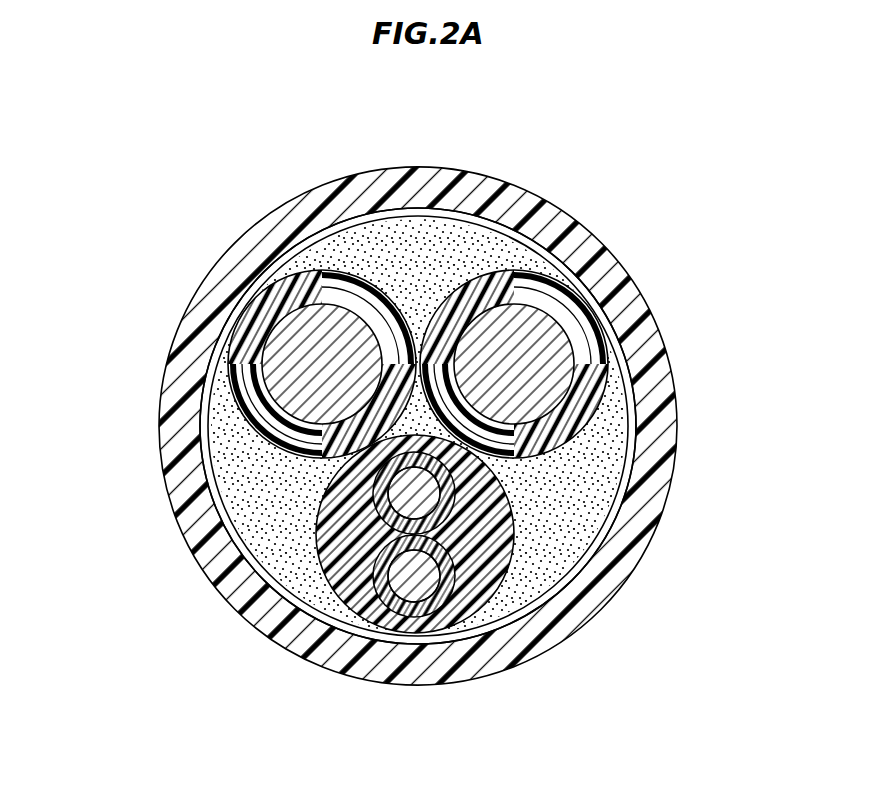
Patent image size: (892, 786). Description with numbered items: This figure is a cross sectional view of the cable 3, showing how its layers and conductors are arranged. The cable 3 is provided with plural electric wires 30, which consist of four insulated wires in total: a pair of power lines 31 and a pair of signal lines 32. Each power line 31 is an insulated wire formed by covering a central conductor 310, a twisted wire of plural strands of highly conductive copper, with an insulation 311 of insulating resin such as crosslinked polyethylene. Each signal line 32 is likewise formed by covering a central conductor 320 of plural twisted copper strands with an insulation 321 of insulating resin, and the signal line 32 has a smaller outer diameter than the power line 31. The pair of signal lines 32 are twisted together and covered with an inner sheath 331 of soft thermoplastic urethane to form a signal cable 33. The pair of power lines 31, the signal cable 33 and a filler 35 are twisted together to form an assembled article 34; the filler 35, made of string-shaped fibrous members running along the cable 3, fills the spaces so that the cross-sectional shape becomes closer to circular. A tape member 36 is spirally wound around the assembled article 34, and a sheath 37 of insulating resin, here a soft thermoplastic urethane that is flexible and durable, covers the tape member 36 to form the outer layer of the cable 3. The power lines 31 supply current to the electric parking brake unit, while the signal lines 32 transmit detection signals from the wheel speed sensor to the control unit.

The cable 3 is at (255, 162).
The electric wires 30 is at (528, 268).
The power line 31 is at (227, 365).
The central conductor 310 is at (550, 353).
The insulation 311 is at (587, 378).
The signal line 32 is at (383, 553).
The central conductor 320 is at (404, 604).
The insulation 321 is at (426, 612).
The signal cable 33 is at (478, 585).
The inner sheath 331 is at (468, 596).
The assembled article 34 is at (563, 453).
The filler 35 is at (582, 520).
The tape member 36 is at (585, 558).
The sheath 37 is at (657, 495).